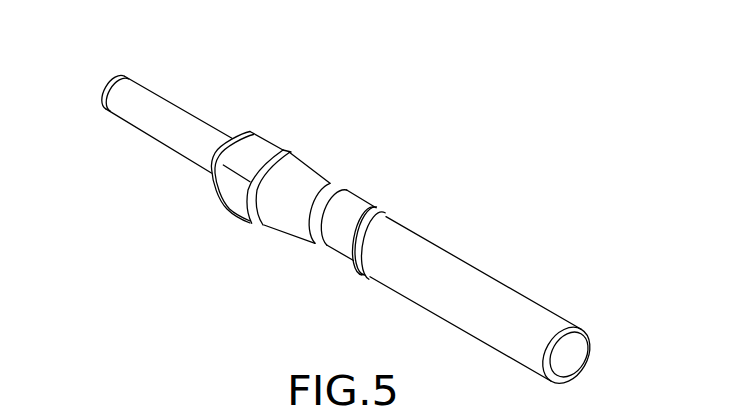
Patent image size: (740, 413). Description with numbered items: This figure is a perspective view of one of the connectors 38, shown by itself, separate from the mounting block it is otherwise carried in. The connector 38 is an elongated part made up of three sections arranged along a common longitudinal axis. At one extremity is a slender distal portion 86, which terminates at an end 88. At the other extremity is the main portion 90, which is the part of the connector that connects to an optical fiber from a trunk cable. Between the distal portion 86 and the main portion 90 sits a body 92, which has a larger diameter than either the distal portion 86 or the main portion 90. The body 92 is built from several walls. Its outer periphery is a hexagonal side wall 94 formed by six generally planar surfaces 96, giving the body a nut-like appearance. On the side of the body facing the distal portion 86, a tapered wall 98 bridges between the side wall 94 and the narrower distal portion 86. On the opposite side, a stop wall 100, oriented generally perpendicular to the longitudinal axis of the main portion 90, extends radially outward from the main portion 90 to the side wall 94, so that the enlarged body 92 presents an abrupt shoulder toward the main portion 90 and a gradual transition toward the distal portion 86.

The connector 38 is at (427, 182).
The distal portion 86 is at (165, 103).
The end 88 is at (105, 87).
The main portion 90 is at (503, 297).
The body 92 is at (298, 125).
The hexagonal side wall 94 is at (240, 221).
The planar surfaces 96 is at (228, 200).
The tapered wall 98 is at (233, 134).
The stop wall 100 is at (295, 155).